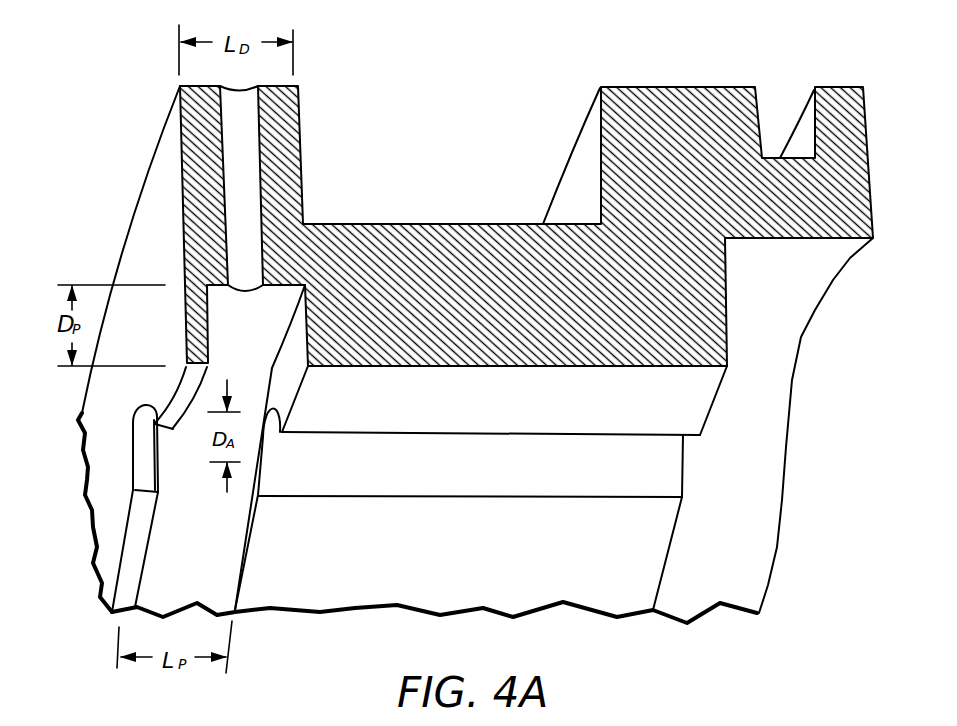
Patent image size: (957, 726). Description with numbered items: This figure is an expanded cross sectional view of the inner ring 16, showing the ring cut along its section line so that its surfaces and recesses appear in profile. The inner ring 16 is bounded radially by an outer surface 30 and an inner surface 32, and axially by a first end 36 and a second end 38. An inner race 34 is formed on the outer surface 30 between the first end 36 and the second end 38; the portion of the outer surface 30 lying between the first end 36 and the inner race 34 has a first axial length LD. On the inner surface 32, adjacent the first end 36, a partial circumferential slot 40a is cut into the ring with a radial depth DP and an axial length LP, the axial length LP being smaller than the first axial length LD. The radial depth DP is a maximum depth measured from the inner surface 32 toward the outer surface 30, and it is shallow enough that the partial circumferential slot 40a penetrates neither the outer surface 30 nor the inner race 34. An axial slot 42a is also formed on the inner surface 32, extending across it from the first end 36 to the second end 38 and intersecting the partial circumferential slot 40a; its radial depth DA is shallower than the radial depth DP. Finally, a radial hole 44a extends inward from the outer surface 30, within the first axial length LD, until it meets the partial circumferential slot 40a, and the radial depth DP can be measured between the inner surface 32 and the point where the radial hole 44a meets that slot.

The inner ring 16 is at (123, 90).
The outer surface 30 is at (284, 82).
The inner surface 32 is at (421, 366).
The inner race 34 is at (365, 224).
The first end 36 is at (180, 197).
The second end 38 is at (732, 297).
The partial circumferential slot 40a is at (163, 520).
The axial slot 42a is at (508, 477).
The radial hole 44a is at (241, 238).